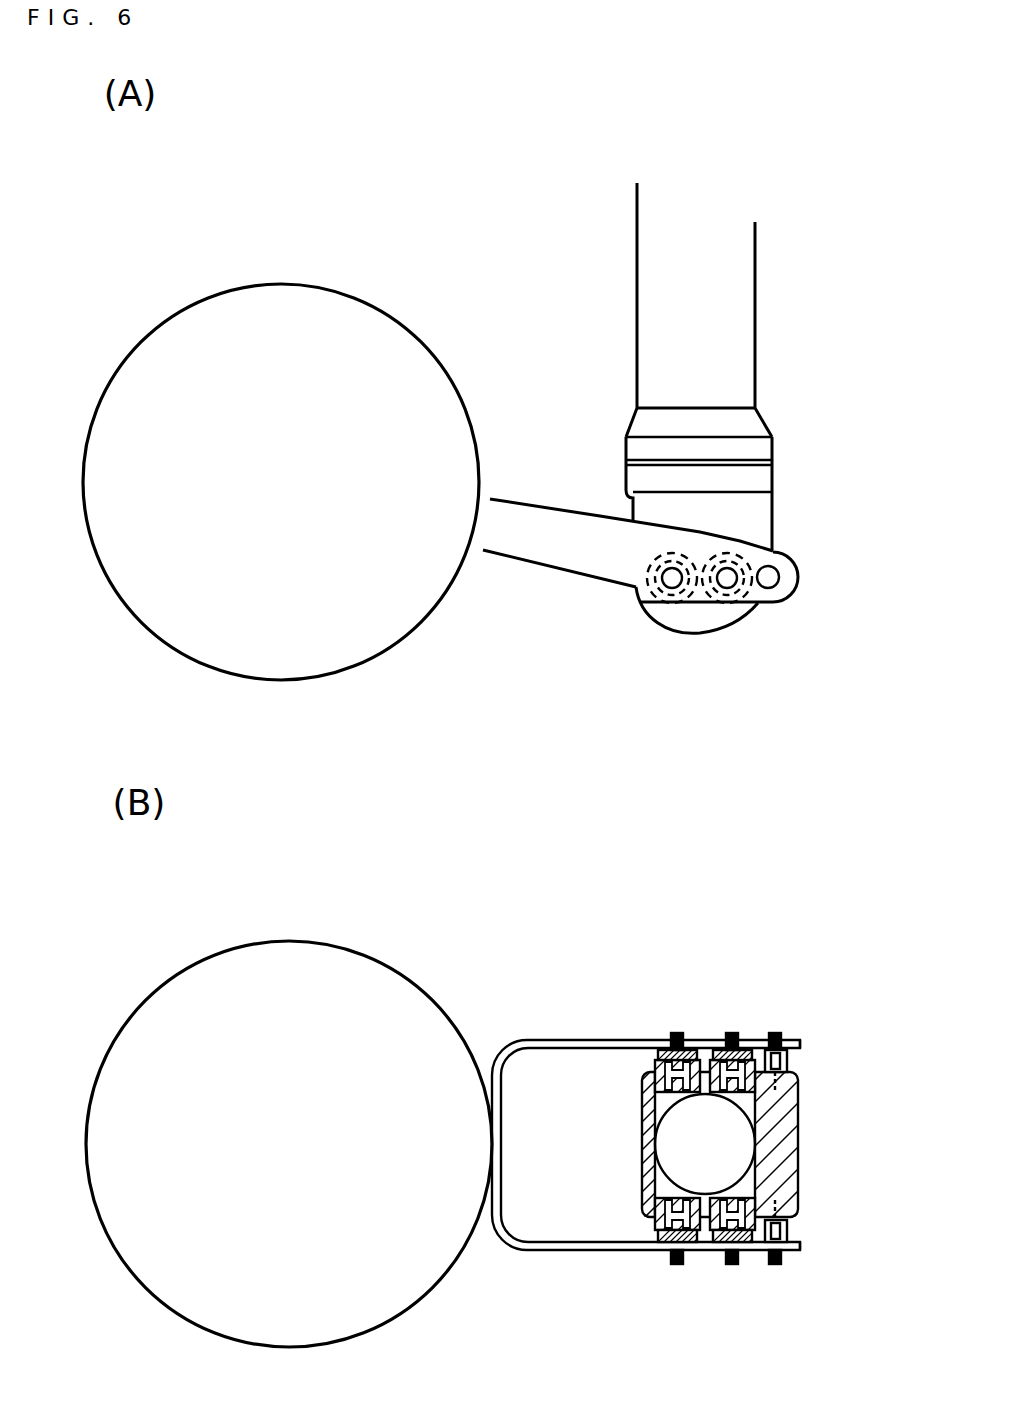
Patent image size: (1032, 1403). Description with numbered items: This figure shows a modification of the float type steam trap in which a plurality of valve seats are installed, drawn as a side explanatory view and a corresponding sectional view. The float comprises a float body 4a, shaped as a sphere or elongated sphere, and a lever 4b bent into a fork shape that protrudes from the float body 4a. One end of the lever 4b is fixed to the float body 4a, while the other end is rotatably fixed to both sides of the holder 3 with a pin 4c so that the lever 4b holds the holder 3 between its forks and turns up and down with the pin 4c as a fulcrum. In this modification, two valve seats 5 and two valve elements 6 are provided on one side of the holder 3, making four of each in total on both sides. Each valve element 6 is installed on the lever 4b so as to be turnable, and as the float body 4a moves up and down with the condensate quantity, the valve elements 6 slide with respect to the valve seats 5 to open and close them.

The holder 3 is at (740, 333).
The float body 4a is at (317, 320).
The lever 4b is at (527, 542).
The pin 4c is at (780, 578).
The valve seat 5 is at (636, 586).
The valve element 6 is at (673, 588).